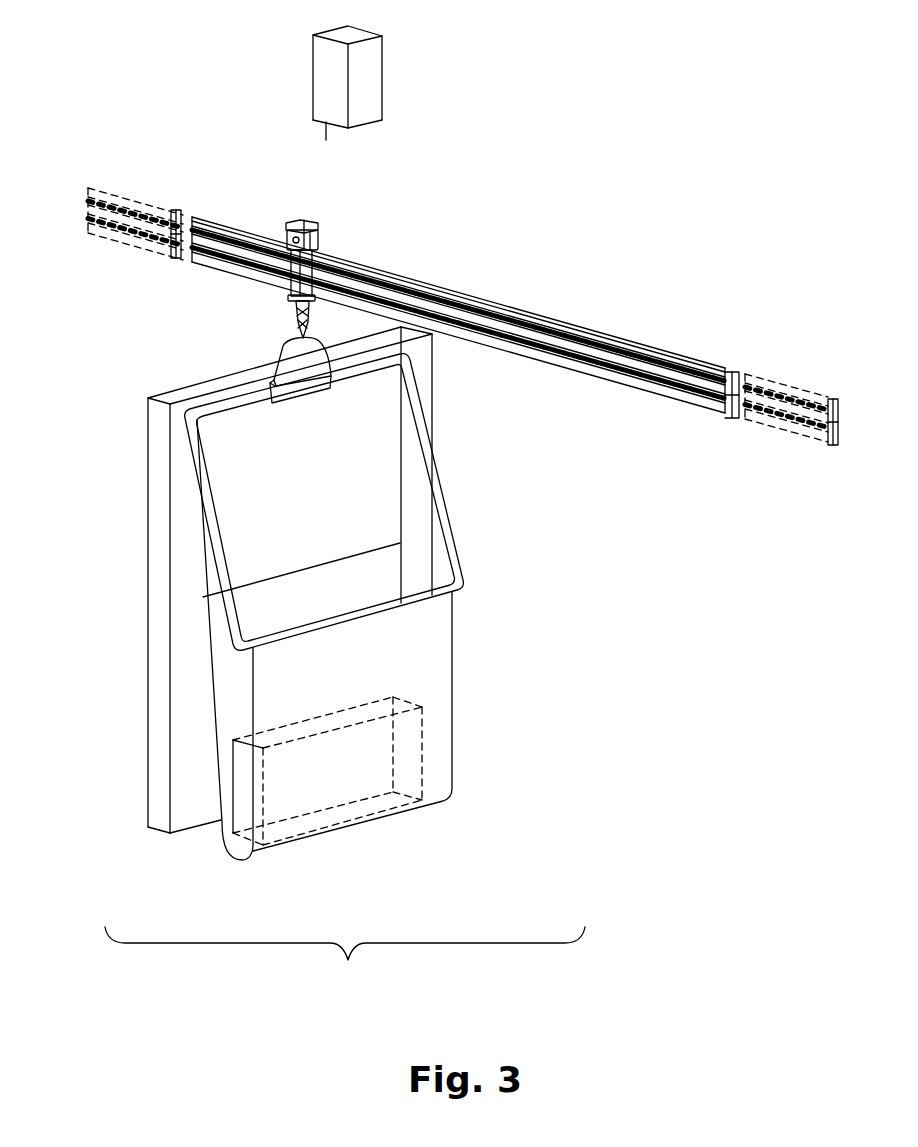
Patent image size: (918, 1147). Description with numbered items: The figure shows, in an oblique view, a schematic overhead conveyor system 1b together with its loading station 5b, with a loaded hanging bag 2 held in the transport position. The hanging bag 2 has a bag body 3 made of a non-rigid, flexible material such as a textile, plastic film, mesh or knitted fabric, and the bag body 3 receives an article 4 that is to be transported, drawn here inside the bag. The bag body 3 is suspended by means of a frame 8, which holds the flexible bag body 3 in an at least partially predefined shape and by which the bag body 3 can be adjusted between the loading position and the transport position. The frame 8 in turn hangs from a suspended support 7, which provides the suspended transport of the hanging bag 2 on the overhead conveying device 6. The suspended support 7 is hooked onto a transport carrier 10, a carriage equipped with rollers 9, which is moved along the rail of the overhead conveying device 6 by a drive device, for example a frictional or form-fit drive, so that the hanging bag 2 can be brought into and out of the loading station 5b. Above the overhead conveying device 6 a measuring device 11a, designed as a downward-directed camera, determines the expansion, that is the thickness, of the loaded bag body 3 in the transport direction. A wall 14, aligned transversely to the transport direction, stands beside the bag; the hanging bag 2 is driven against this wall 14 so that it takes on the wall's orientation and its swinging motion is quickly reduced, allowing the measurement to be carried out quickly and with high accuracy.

The overhead conveyor system 1b is at (250, 64).
The measuring device 11a is at (367, 73).
The rollers 9 is at (290, 250).
The transport carrier 10 is at (314, 284).
The suspended support 7 is at (293, 365).
The overhead conveying device 6 is at (625, 362).
The wall 14 is at (158, 742).
The hanging bag 2 is at (506, 749).
The frame 8 is at (210, 543).
The bag body 3 is at (427, 637).
The article 4 is at (243, 812).
The loading station 5b is at (345, 964).